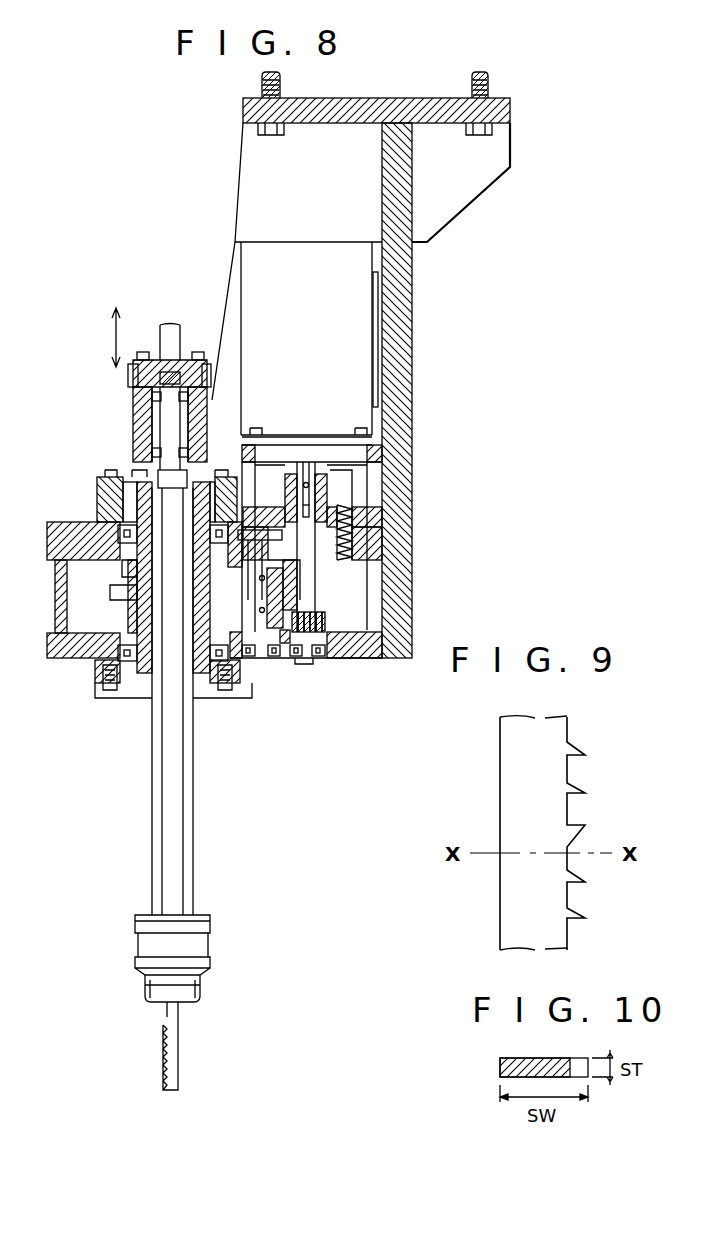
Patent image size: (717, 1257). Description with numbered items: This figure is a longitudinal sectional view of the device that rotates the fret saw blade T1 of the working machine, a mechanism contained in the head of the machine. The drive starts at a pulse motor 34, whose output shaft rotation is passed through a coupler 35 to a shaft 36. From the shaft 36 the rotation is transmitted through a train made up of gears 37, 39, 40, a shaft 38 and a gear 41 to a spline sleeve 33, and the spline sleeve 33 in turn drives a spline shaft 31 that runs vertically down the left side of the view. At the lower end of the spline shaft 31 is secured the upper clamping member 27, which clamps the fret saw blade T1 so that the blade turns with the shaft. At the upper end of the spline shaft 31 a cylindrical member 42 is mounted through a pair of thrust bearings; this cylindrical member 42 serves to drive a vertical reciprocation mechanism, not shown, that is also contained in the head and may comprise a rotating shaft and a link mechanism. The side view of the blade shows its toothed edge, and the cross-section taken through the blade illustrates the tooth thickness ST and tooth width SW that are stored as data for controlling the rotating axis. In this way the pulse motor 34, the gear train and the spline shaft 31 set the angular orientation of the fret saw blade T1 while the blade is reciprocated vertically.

The upper clamping member 27 is at (207, 940).
The spline shaft 31 is at (195, 765).
The spline sleeve 33 is at (137, 672).
The pulse motor 34 is at (306, 262).
The coupler 35 is at (328, 484).
The shaft 36 is at (322, 592).
The gear 37 is at (335, 622).
The shaft 38 is at (252, 634).
The gear 39 is at (258, 638).
The gear 40 is at (300, 576).
The gear 41 is at (110, 588).
The cylindrical member 42 is at (133, 424).
The fret saw blade T1 is at (180, 1057).